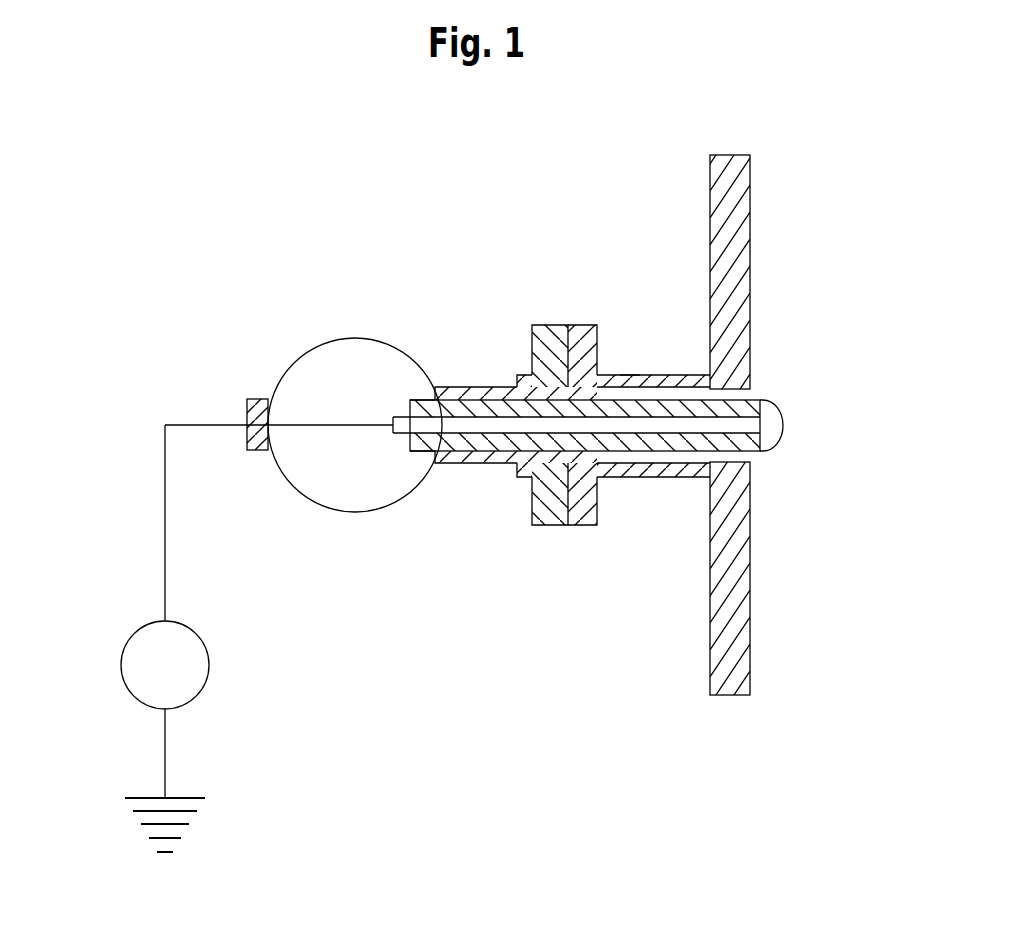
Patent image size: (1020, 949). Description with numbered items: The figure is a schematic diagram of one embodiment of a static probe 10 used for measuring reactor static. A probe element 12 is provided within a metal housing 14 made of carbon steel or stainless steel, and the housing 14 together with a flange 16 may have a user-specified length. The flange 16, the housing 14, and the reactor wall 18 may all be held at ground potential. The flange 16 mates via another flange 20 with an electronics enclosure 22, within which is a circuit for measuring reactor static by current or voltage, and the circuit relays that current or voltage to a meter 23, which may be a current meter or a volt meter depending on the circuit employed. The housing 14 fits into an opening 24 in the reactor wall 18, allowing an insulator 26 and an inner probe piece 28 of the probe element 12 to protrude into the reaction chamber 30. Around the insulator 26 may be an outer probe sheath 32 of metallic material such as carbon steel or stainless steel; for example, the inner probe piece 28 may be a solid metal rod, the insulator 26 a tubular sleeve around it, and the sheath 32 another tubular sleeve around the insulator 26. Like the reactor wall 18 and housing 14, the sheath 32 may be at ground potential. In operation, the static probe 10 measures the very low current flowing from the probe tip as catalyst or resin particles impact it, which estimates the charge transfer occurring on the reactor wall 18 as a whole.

The static probe 10 is at (389, 222).
The probe element 12 is at (702, 425).
The housing 14 is at (635, 477).
The flange 16 is at (587, 527).
The reactor wall 18 is at (735, 182).
The flange 20 is at (540, 527).
The electronics enclosure 22 is at (302, 353).
The meter 23 is at (133, 633).
The opening 24 is at (775, 376).
The insulator 26 is at (692, 407).
The inner probe piece 28 is at (773, 423).
The reaction chamber 30 is at (929, 442).
The outer probe sheath 32 is at (628, 373).